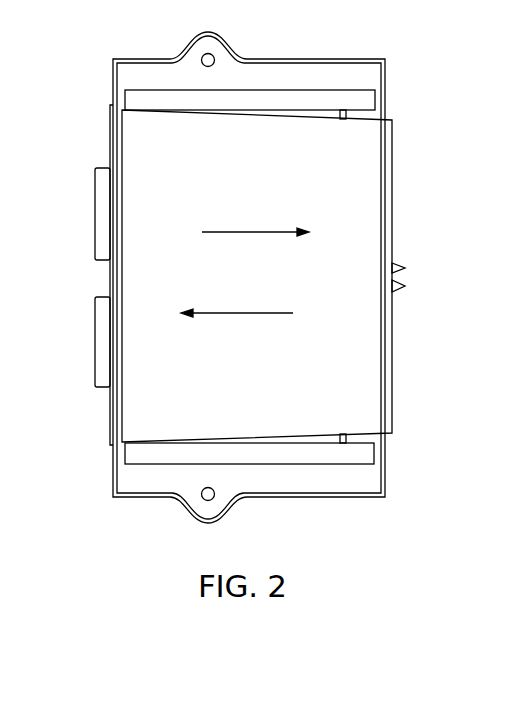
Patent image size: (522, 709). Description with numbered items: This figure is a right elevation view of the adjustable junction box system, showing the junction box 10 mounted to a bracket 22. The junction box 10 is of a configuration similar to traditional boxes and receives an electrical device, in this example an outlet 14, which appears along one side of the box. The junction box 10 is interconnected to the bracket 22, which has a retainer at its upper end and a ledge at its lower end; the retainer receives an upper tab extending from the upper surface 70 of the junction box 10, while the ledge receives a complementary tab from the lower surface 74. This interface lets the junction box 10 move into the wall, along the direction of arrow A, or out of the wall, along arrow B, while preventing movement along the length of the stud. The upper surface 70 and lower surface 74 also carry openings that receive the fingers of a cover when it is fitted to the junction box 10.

The junction box 10 is at (345, 313).
The outlet 14 is at (103, 360).
The bracket 22 is at (280, 80).
The upper surface 70 is at (373, 118).
The lower surface 74 is at (312, 438).